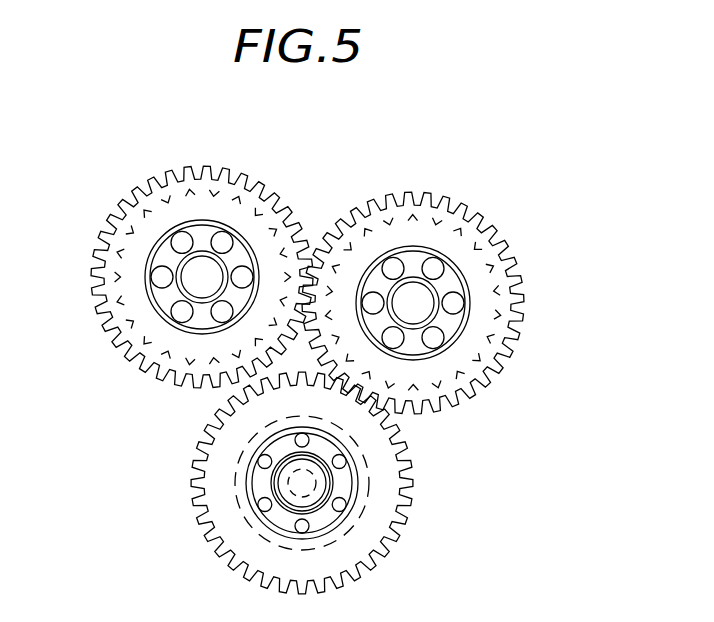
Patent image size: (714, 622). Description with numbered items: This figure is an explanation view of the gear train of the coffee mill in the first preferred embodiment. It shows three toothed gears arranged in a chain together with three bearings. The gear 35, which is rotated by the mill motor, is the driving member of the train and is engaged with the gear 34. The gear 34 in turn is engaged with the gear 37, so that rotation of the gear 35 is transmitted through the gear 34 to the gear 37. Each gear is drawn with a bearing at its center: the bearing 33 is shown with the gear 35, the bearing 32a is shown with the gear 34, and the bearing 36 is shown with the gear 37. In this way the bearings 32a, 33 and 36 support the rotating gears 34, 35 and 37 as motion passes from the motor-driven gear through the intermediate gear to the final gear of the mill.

The gear 37 is at (112, 240).
The bearing 36 is at (223, 241).
The gear 34 is at (517, 328).
The bearing 32a is at (430, 272).
The gear 35 is at (364, 548).
The bearing 33 is at (342, 463).